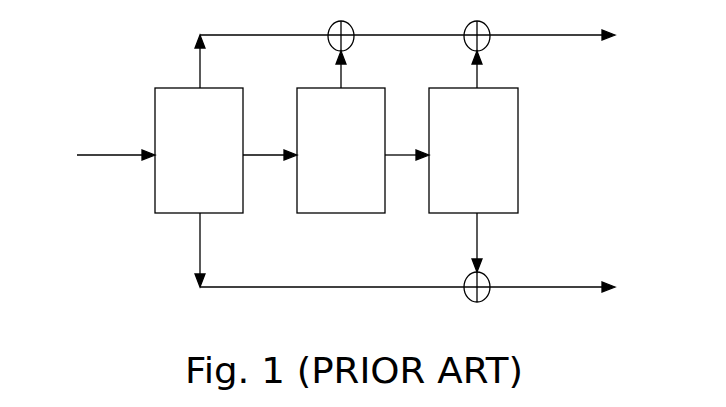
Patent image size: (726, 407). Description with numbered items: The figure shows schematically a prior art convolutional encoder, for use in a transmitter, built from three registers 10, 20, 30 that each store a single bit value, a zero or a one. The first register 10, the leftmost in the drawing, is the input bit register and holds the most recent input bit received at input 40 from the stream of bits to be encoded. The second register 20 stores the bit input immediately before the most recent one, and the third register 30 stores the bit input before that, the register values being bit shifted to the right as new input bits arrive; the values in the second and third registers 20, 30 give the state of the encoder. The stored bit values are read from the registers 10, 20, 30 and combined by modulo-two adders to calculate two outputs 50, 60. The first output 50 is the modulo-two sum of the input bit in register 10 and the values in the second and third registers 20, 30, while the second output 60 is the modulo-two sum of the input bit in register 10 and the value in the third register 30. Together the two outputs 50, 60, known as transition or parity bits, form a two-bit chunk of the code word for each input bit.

The first register 10 is at (199, 150).
The second register 20 is at (341, 150).
The third register 30 is at (473, 150).
The input 40 is at (96, 155).
The first output 50 is at (426, 54).
The second output 60 is at (426, 258).